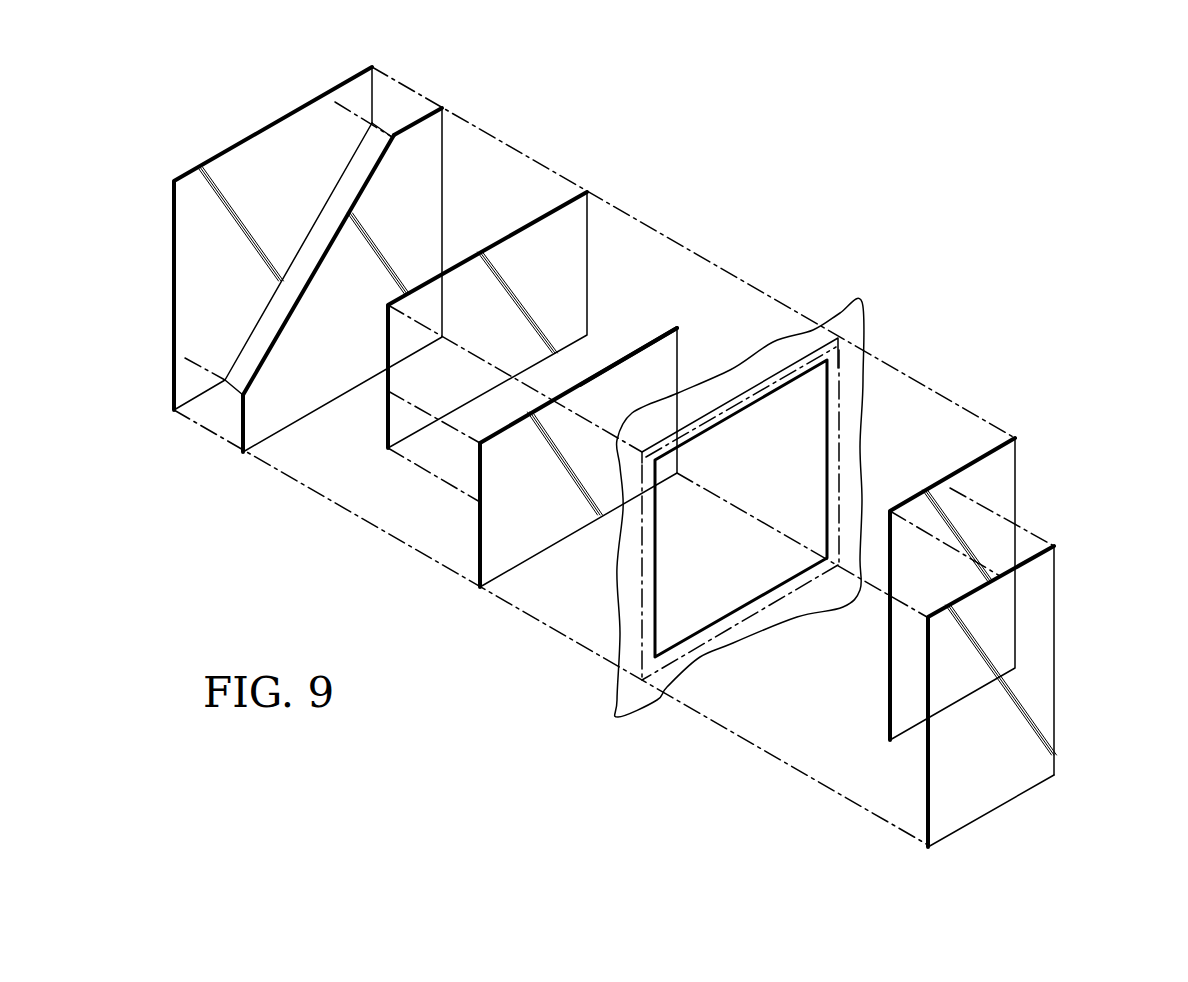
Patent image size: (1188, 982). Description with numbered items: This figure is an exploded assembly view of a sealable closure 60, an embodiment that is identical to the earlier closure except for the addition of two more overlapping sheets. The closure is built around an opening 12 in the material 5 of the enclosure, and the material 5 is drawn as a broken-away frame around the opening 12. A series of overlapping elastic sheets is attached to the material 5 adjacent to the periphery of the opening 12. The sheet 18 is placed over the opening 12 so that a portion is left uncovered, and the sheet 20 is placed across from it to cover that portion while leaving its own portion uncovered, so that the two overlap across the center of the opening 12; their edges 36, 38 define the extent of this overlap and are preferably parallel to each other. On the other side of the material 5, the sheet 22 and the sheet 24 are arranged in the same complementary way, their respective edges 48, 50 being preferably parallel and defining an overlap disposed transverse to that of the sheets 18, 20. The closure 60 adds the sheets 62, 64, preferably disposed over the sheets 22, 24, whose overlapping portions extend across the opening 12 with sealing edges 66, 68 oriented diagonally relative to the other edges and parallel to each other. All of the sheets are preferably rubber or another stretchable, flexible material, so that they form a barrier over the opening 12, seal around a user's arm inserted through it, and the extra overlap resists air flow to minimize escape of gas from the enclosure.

The material 5 is at (850, 302).
The opening 12 is at (826, 443).
The elastic sheet 18 is at (1010, 472).
The elastic sheet 20 is at (1023, 777).
The elastic sheet 22 is at (668, 358).
The elastic sheet 24 is at (580, 217).
The edge 36 is at (1055, 662).
The edge 38 is at (890, 663).
The edge 48 is at (633, 350).
The edge 50 is at (533, 345).
The closure 60 is at (766, 203).
The overlapping sheet 62 is at (437, 157).
The overlapping sheet 64 is at (270, 130).
The sealing edge 66 is at (296, 312).
The sealing edge 68 is at (303, 242).